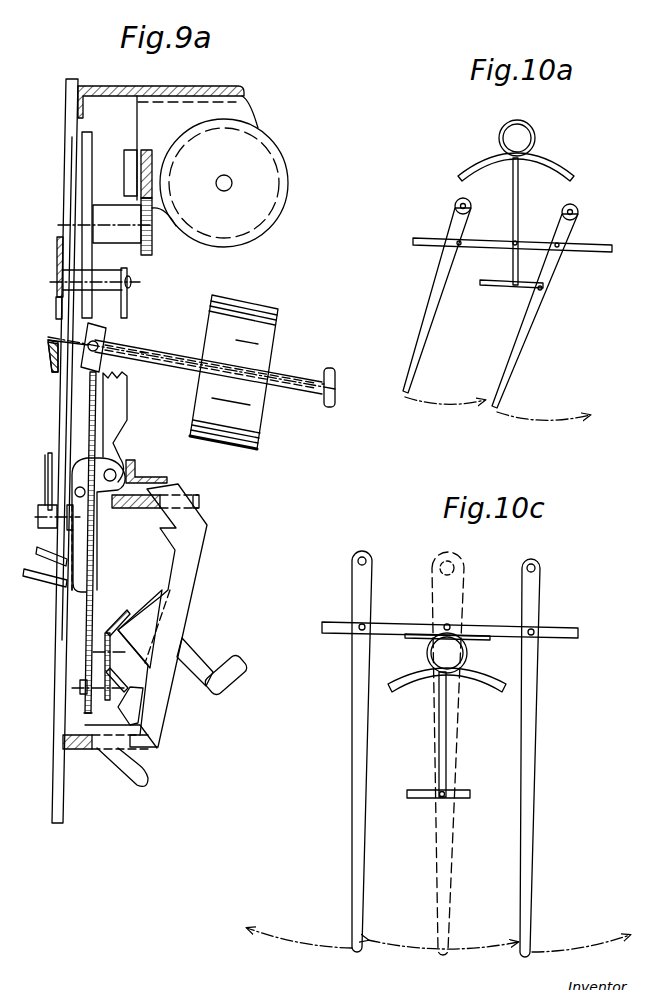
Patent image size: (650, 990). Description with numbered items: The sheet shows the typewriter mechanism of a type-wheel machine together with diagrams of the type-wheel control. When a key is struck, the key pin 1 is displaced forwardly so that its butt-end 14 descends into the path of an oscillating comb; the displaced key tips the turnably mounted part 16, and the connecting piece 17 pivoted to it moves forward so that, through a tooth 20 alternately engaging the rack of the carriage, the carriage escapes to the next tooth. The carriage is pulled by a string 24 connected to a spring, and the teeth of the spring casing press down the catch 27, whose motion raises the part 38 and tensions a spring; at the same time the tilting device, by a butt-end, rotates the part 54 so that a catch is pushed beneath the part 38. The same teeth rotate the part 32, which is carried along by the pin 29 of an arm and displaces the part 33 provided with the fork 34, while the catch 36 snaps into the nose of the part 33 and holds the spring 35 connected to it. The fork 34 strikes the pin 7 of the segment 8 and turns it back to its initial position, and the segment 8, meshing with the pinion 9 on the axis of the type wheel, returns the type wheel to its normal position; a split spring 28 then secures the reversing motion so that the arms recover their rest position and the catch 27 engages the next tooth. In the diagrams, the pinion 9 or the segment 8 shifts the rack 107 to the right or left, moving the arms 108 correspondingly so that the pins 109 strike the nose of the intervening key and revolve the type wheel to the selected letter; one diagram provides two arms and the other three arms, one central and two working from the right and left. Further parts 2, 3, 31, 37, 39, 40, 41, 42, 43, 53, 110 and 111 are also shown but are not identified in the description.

In FIG. 9A, the key pin 1 is at (197, 560).
In FIG. 9A, the bracket 2 is at (163, 482).
In FIG. 9A, the lever bar 3 is at (118, 423).
In FIG. 9A, the pin 7 is at (88, 177).
In FIG. 10A, the segment 8 is at (515, 195).
In FIG. 10C, the segment 8 is at (447, 718).
In FIG. 10A, the pinion 9 is at (532, 133).
In FIG. 10C, the pinion 9 is at (467, 653).
In FIG. 9A, the butt-end 14 is at (124, 305).
In FIG. 9A, the tilting part 16 is at (105, 277).
In FIG. 9A, the connecting piece 17 is at (57, 242).
In FIG. 9A, the tooth 20 is at (50, 355).
In FIG. 9A, the string 24 is at (48, 475).
In FIG. 9A, the catch 27 is at (42, 503).
In FIG. 9A, the split spring 28 is at (72, 587).
In FIG. 9A, the pin 29 is at (37, 573).
In FIG. 9A, the push rod 31 is at (93, 418).
In FIG. 9A, the part 32 is at (80, 693).
In FIG. 9A, the part 33 is at (107, 665).
In FIG. 9A, the fork 34 is at (123, 608).
In FIG. 9A, the spring 35 is at (128, 152).
In FIG. 9A, the catch 36 is at (148, 155).
In FIG. 9A, the gear 37 is at (152, 242).
In FIG. 9A, the part 38 is at (90, 362).
In FIG. 9A, the pin 39 is at (143, 360).
In FIG. 9A, the drum 40 is at (262, 432).
In FIG. 9A, the bracket 41 is at (137, 627).
In FIG. 9A, the stop piece 42 is at (133, 703).
In FIG. 9A, the drum 43 is at (270, 217).
In FIG. 9A, the shaft 53 is at (167, 355).
In FIG. 9A, the part 54 is at (202, 503).
In FIG. 10A, the rack 107 is at (597, 246).
In FIG. 10C, the rack 107 is at (550, 632).
In FIG. 10A, the arms 108 is at (548, 267).
In FIG. 10C, the arms 108 is at (530, 698).
In FIG. 10A, the pins 109 is at (498, 405).
In FIG. 10C, the pins 109 is at (523, 955).
In FIG. 10C, the pivot 110 is at (537, 567).
In FIG. 10A, the pivot pin 111 is at (568, 238).
In FIG. 10C, the pivot pin 111 is at (533, 641).